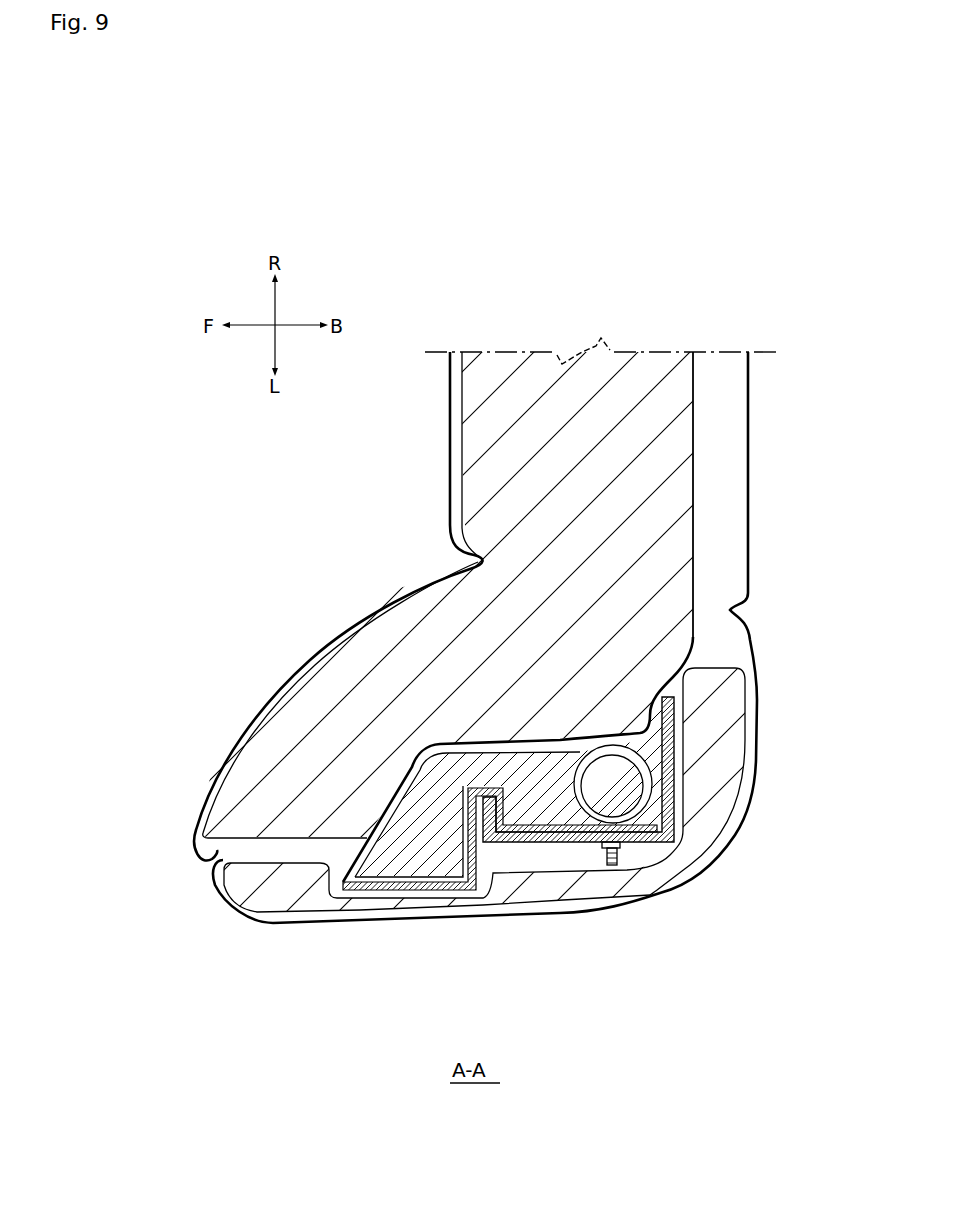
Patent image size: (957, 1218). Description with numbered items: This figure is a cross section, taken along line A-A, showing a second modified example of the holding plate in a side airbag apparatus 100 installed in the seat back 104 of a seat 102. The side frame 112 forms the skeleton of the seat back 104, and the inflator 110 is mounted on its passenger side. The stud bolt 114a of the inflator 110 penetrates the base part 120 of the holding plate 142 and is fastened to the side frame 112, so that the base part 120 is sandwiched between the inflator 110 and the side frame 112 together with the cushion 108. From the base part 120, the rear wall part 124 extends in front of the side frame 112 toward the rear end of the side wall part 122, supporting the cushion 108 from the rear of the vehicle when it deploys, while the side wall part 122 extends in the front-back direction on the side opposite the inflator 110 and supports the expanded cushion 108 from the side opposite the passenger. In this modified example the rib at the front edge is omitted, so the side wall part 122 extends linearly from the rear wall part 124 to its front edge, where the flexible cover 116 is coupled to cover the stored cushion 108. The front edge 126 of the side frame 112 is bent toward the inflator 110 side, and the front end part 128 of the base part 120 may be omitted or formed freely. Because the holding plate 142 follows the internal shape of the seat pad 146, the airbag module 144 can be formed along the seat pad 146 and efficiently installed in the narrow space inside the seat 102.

The side airbag apparatus 100 is at (788, 734).
The seat 102 is at (450, 412).
The seat back 104 is at (750, 437).
The cushion 108 is at (520, 790).
The inflator 110 is at (630, 745).
The side frame 112 is at (660, 842).
The stud bolt 114a is at (618, 866).
The cover 116 is at (367, 838).
The base part 120 is at (578, 871).
The side wall part 122 is at (400, 899).
The rear wall part 124 is at (466, 835).
The front edge 126 is at (483, 800).
The front end part 128 is at (500, 778).
The holding plate 142 is at (350, 889).
The airbag module 144 is at (393, 802).
The seat pad 146 is at (693, 568).